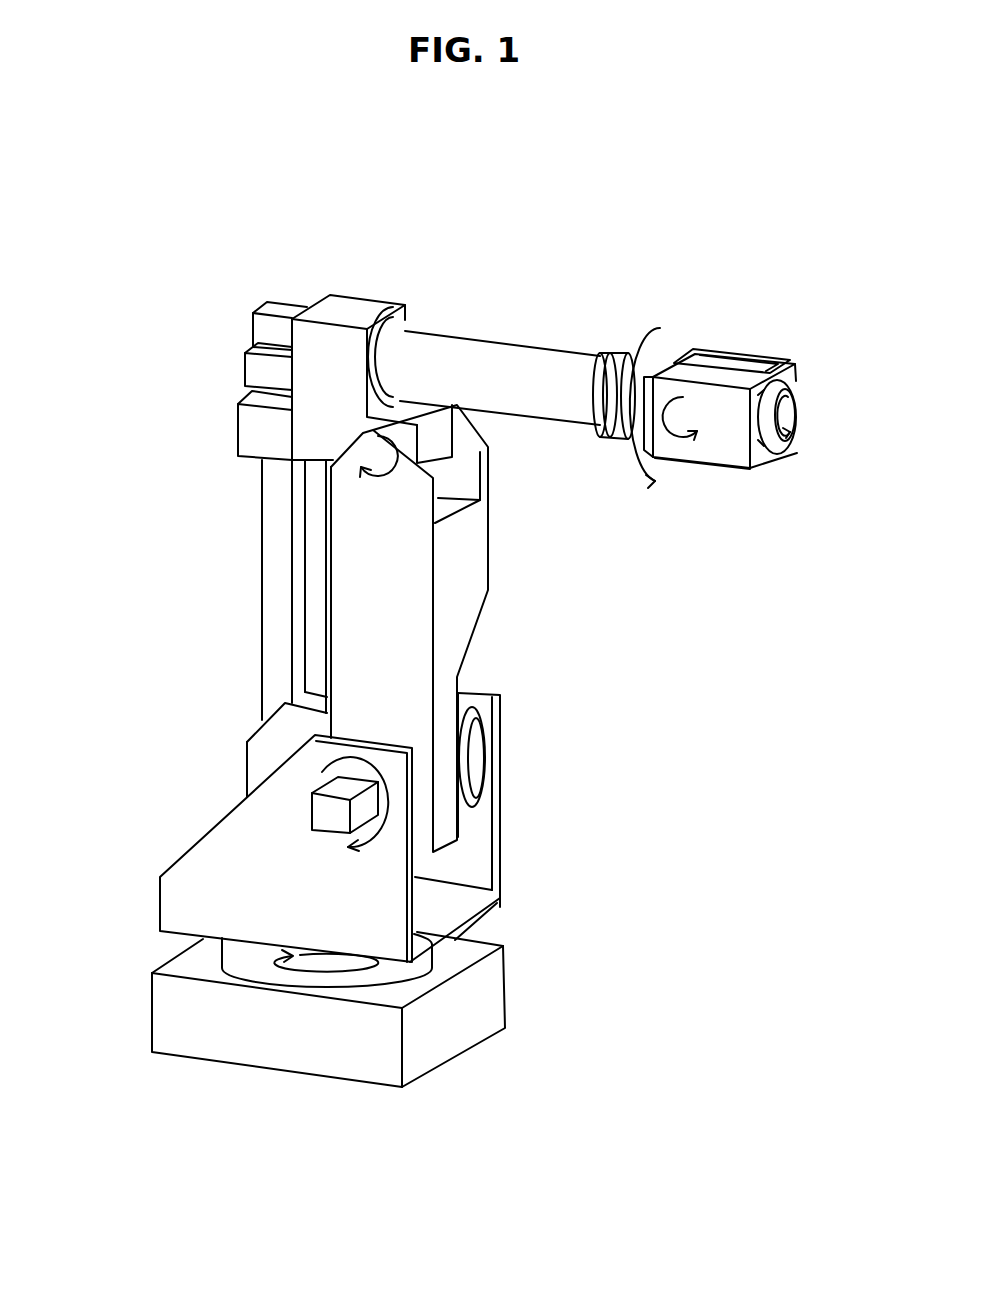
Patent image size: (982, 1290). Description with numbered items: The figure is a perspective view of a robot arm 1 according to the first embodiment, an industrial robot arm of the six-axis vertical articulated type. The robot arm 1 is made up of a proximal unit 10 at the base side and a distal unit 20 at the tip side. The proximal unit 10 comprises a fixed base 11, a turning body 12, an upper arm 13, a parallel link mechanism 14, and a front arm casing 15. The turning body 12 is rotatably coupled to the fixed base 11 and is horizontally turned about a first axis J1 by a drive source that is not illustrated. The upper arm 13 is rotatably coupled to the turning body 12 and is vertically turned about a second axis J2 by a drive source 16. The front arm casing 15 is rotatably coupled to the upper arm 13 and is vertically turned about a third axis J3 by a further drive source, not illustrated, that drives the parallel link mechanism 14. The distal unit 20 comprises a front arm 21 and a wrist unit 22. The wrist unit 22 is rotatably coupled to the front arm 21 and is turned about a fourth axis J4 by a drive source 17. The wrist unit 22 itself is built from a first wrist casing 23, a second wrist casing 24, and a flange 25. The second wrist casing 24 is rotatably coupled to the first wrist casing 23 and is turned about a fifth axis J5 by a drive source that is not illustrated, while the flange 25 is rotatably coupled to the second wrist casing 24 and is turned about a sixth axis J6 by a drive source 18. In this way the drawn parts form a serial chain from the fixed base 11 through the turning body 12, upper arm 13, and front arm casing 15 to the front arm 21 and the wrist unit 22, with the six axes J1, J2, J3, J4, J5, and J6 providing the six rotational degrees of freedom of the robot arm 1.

The robot arm 1 is at (753, 165).
The proximal unit 10 is at (98, 237).
The fixed base 11 is at (460, 1018).
The turning body 12 is at (218, 853).
The upper arm 13 is at (457, 607).
The parallel link mechanism 14 is at (214, 608).
The front arm casing 15 is at (255, 437).
The drive source 16 is at (325, 812).
The drive source 17 is at (255, 370).
The drive source 18 is at (263, 330).
The distal unit 20 is at (845, 232).
The front arm 21 is at (452, 350).
The wrist unit 22 is at (776, 344).
The first wrist casing 23 is at (678, 367).
The second wrist casing 24 is at (708, 447).
The flange 25 is at (793, 383).
The first axis J1 is at (312, 975).
The second axis J2 is at (385, 830).
The third axis J3 is at (397, 481).
The fourth axis J4 is at (660, 328).
The fifth axis J5 is at (697, 400).
The sixth axis J6 is at (793, 443).